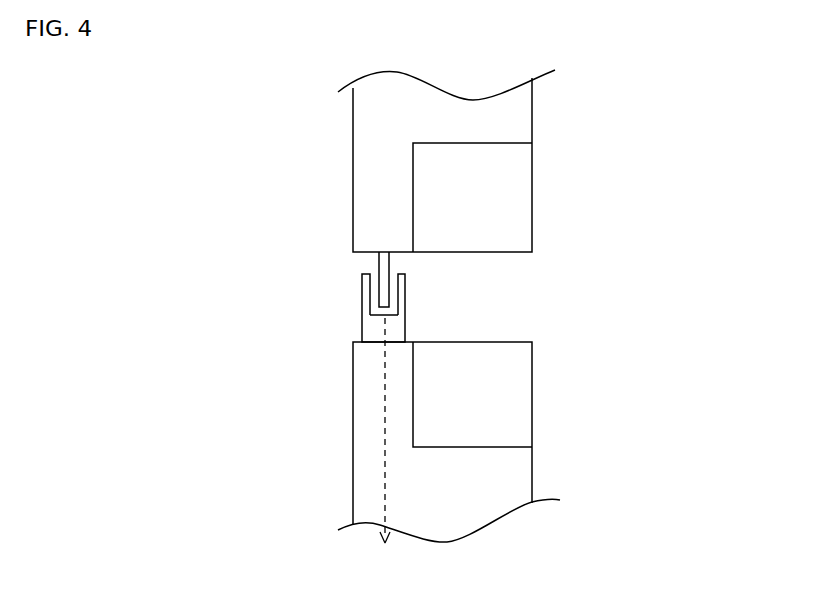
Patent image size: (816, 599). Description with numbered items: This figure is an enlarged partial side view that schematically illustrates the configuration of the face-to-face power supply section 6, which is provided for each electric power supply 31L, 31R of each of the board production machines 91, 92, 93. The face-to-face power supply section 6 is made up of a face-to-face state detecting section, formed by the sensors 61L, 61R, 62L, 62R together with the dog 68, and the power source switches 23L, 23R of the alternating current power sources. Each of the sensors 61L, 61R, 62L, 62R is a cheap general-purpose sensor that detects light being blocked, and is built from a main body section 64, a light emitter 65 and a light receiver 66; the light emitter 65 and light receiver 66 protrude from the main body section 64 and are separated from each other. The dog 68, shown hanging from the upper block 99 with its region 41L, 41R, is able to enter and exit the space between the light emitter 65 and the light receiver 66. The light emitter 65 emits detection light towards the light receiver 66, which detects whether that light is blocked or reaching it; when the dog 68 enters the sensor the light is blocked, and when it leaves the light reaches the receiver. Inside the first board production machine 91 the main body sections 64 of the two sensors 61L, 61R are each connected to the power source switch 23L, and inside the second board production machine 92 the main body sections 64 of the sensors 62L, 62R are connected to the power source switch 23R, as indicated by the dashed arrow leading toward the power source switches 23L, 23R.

The face-to-face power supply section 6 is at (321, 239).
The upper housing 99 is at (355, 158).
The left upper component 41L is at (472, 197).
The right upper component 41R is at (522, 215).
The dog 68 is at (379, 262).
The main body section 64 is at (362, 333).
The light emitter 65 is at (362, 297).
The light receiver 66 is at (408, 290).
The sensor 61L is at (524, 308).
The sensor 61R is at (524, 308).
The sensor 62L is at (524, 308).
The sensor 62R is at (426, 322).
The first board production machine 91 is at (377, 442).
The second board production machine 92 is at (377, 442).
The board production machine 93 is at (360, 449).
The electric power supply 31L is at (472, 394).
The electric power supply 31R is at (520, 406).
The power source switch 23L is at (428, 450).
The power source switch 23R is at (492, 574).